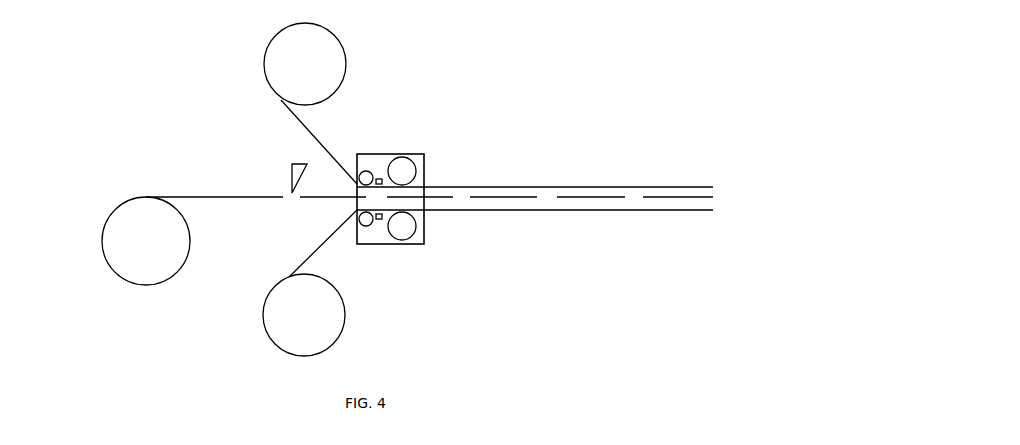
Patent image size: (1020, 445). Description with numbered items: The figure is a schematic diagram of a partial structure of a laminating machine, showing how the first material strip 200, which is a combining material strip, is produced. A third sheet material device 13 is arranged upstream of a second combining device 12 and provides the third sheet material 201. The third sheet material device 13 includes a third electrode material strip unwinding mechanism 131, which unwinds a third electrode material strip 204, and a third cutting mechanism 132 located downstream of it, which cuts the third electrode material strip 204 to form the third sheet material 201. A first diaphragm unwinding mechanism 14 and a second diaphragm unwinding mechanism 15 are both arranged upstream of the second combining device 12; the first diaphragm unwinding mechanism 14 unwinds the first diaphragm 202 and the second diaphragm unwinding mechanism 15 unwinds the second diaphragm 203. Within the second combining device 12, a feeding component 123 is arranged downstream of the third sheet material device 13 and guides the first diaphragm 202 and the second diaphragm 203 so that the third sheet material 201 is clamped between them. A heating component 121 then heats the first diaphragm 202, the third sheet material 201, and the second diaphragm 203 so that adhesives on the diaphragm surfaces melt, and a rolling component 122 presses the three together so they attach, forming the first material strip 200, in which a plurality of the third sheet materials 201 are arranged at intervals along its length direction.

The second combining device 12 is at (380, 209).
The heating component 121 is at (379, 178).
The rolling component 122 is at (412, 158).
The feeding component 123 is at (358, 170).
The third sheet material device 13 is at (140, 110).
The third electrode material strip unwinding mechanism 131 is at (102, 245).
The third cutting mechanism 132 is at (290, 177).
The first diaphragm unwinding mechanism 14 is at (262, 328).
The second diaphragm unwinding mechanism 15 is at (263, 55).
The first material strip 200 is at (568, 150).
The third sheet material 201 is at (490, 196).
The first diaphragm 202 is at (306, 258).
The second diaphragm 203 is at (310, 138).
The third electrode material strip 204 is at (172, 197).